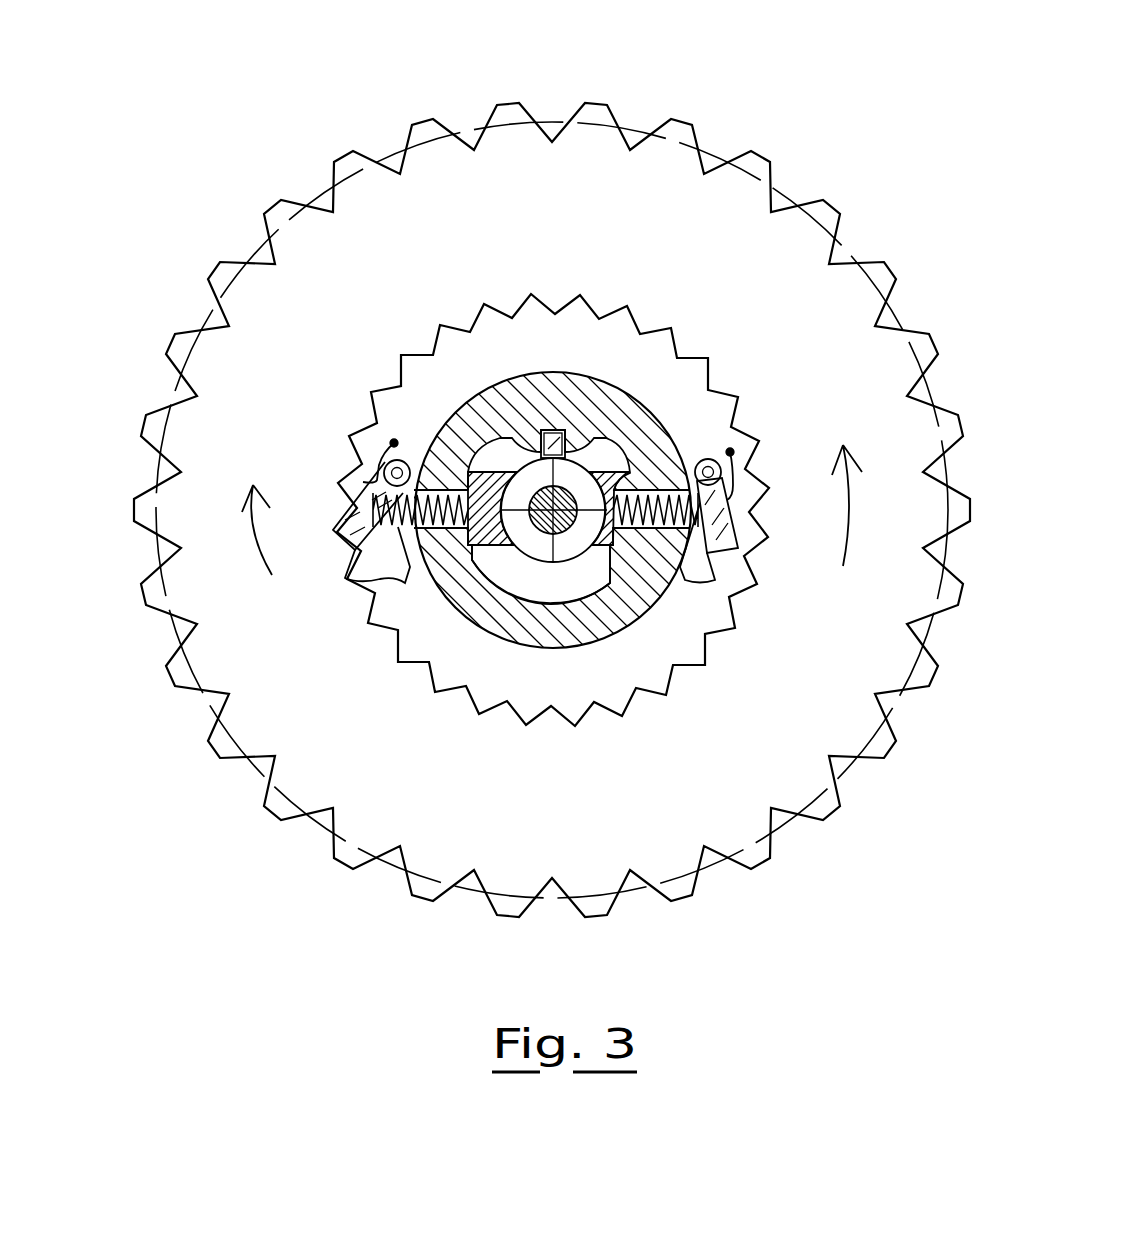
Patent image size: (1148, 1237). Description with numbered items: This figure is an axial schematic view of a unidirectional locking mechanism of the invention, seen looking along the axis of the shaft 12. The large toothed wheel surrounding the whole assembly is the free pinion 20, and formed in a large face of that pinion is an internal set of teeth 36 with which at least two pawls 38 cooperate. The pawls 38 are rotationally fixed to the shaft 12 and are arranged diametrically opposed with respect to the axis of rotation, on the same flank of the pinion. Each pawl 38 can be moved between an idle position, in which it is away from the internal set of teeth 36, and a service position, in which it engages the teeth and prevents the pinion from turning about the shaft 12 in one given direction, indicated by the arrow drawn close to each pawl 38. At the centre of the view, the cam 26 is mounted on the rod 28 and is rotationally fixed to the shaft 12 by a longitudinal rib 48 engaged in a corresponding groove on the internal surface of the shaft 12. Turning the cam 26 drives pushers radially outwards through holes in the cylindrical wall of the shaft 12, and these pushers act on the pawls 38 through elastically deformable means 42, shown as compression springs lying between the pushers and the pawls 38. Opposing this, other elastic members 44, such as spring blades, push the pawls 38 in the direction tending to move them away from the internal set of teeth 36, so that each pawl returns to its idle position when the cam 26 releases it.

The free pinion 20 is at (548, 92).
The shaft 12 is at (656, 408).
The internal set of teeth 36 is at (548, 316).
The longitudinal rib 48 is at (566, 437).
The elastic members 44 is at (372, 443).
The pawls 38 is at (338, 552).
The elastically deformable means 42 is at (363, 580).
The cam 26 is at (500, 598).
The rod 28 is at (585, 595).